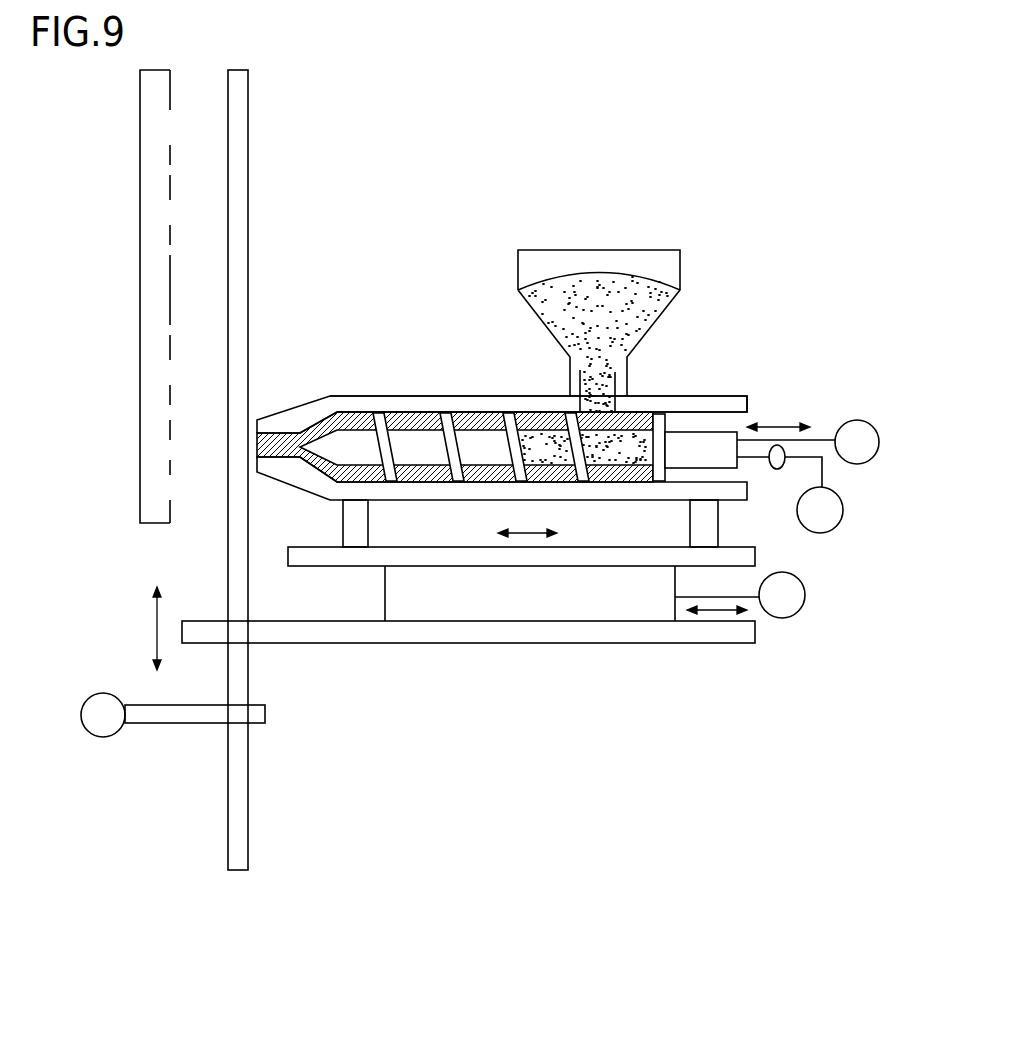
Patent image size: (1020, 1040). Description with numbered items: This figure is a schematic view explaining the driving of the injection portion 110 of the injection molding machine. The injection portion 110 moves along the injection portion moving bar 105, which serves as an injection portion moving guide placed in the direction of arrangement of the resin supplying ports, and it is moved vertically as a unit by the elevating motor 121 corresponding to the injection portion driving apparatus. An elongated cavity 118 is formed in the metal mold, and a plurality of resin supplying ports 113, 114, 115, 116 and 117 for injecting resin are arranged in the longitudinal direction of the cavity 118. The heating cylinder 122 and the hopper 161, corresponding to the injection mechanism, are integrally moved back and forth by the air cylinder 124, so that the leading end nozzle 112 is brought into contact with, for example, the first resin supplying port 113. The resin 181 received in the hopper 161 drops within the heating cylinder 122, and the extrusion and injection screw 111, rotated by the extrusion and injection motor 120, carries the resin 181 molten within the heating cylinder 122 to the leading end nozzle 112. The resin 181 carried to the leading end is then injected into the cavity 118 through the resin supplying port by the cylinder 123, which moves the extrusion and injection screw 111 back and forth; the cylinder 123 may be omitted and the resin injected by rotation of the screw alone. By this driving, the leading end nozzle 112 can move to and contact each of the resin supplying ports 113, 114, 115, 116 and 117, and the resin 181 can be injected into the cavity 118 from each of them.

The injection portion moving bar 105 is at (237, 830).
The injection portion 110 is at (622, 727).
The extrusion and injection screw 111 is at (359, 437).
The leading end nozzle 112 is at (283, 408).
The first resin supplying port 113 is at (170, 450).
The resin supplying port 114 is at (170, 372).
The resin supplying port 115 is at (170, 294).
The resin supplying port 116 is at (170, 214).
The resin supplying port 117 is at (170, 132).
The cavity 118 is at (153, 518).
The extrusion and injection motor 120 is at (830, 533).
The elevating motor 121 is at (108, 737).
The heating cylinder 122 is at (462, 406).
The cylinder 123 is at (850, 419).
The air cylinder 124 is at (790, 620).
The hopper 161 is at (643, 262).
The resin 181 is at (635, 323).